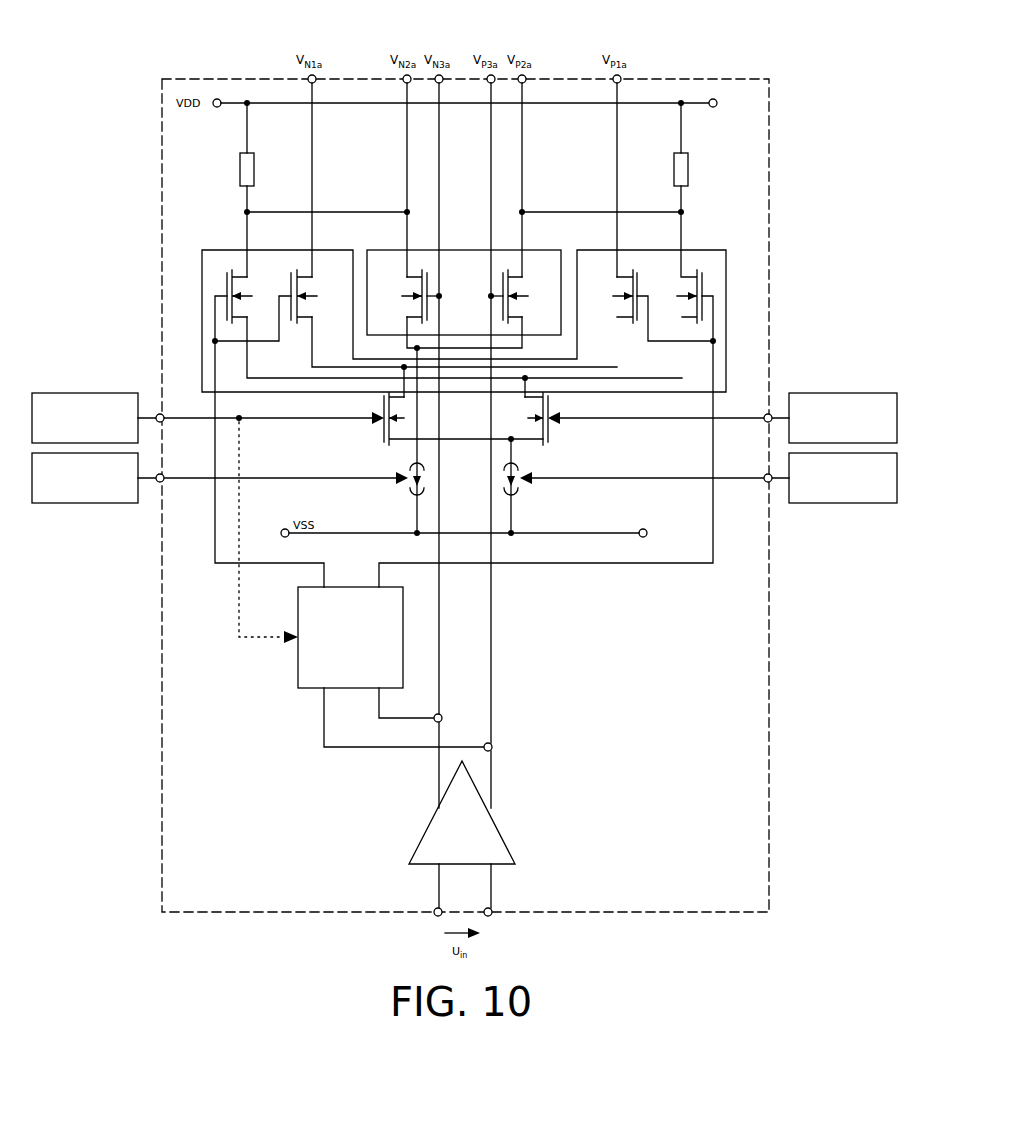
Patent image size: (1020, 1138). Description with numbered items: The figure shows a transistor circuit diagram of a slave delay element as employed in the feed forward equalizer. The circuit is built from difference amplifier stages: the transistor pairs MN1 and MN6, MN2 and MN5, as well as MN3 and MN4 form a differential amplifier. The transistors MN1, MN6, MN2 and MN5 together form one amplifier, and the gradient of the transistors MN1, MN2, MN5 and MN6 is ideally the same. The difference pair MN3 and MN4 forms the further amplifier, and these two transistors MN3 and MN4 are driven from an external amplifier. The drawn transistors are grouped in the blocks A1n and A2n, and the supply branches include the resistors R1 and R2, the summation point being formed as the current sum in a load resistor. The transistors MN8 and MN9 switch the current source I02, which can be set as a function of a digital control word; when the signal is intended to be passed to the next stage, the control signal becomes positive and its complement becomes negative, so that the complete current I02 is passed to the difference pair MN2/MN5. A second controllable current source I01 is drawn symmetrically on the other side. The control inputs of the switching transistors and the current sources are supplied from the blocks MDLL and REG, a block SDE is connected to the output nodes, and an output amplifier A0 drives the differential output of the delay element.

The resistor R1 is at (254, 190).
The resistor R2 is at (688, 190).
The transistor MN1 is at (447, 428).
The transistor MN2 is at (454, 318).
The transistor MN3 is at (447, 309).
The transistor MN4 is at (518, 296).
The transistor MN5 is at (649, 307).
The transistor MN6 is at (546, 428).
The transistor MN8 is at (351, 422).
The transistor MN9 is at (646, 422).
The first amplifier stage block A1n is at (464, 321).
The second amplifier stage block A2n is at (464, 292).
The current I02 is at (292, 440).
The current source I01 is at (636, 486).
The master delay locked loop MDLL is at (464, 418).
The register REG is at (464, 478).
The sense/detector element SDE is at (374, 586).
The output amplifier A0 is at (462, 838).